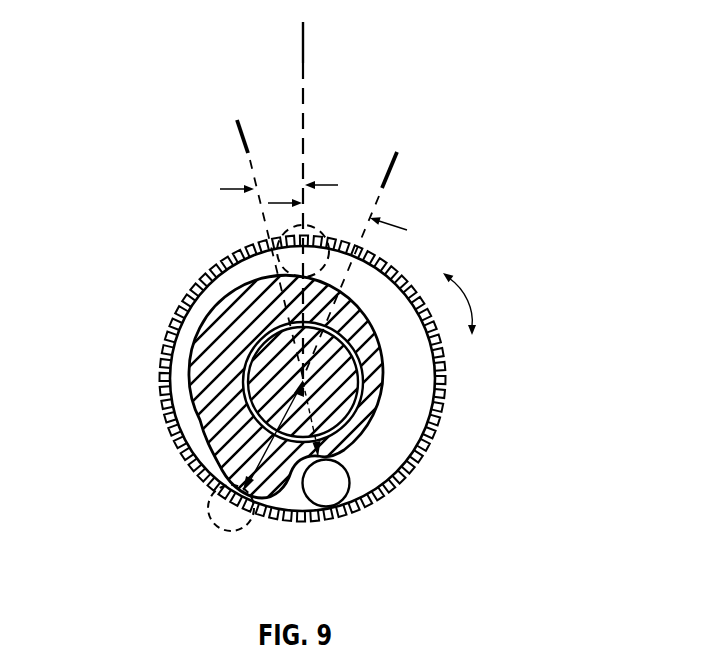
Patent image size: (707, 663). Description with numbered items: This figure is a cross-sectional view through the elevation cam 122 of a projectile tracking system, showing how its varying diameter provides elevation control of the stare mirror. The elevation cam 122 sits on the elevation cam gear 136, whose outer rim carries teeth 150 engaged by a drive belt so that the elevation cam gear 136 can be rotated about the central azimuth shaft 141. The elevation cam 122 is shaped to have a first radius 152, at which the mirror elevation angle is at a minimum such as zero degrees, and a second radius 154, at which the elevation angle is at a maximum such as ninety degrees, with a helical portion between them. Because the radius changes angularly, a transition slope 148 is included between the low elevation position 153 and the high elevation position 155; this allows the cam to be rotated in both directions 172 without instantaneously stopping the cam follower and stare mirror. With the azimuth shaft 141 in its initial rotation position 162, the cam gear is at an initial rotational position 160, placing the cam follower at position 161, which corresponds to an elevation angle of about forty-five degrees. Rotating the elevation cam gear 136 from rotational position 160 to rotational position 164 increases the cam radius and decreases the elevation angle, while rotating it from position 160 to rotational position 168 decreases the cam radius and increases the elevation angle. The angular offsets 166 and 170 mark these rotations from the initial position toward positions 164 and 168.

The elevation cam 122 is at (213, 345).
The elevation cam gear 136 is at (415, 363).
The azimuth shaft 141 is at (270, 370).
The transition slope 148 is at (305, 458).
The teeth 150 is at (438, 433).
The first radius 152 is at (311, 420).
The low elevation position 153 is at (352, 480).
The second radius 154 is at (263, 457).
The high elevation position 155 is at (217, 530).
The initial rotational position 160 is at (305, 113).
The cam follower position 161 is at (317, 229).
The initial rotation position 162 is at (305, 45).
The rotational position 164 is at (238, 137).
The first angle 166 is at (220, 189).
The rotational position 168 is at (393, 167).
The second angle 170 is at (407, 230).
The directions 172 is at (470, 300).